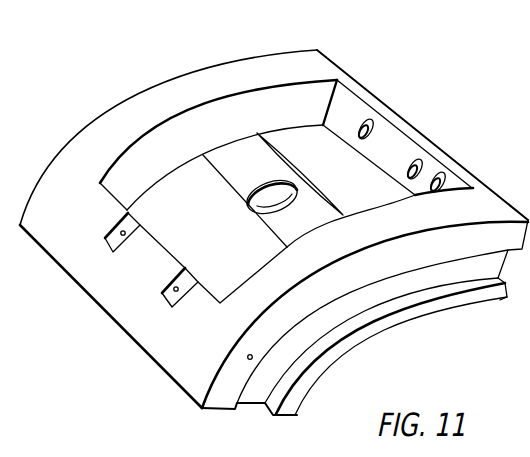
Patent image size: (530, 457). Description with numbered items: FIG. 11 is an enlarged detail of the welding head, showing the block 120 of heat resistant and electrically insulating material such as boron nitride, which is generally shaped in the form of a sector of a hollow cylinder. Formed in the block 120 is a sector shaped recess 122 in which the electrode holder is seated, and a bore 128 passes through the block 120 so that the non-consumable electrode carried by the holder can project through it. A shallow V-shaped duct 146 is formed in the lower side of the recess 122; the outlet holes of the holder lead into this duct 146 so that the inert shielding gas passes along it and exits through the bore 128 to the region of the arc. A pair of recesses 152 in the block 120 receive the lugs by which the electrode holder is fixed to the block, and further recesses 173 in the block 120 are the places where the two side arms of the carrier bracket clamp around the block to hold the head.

The block 120 is at (158, 332).
The sector shaped recess 122 is at (127, 173).
The bore 128 is at (283, 190).
The shallow V-shaped duct 146 is at (241, 149).
The recesses 152 is at (103, 242).
The recesses 173 is at (263, 380).